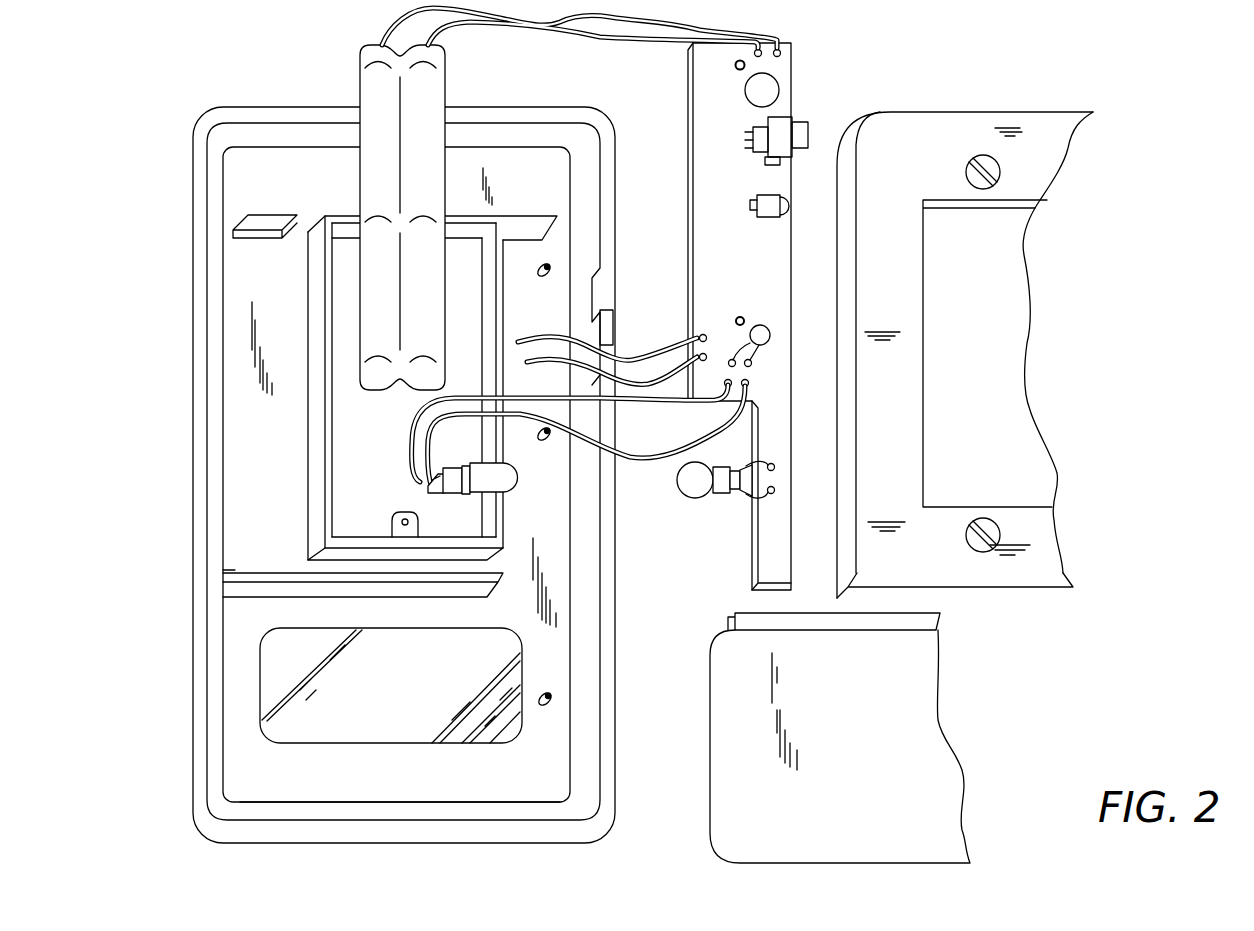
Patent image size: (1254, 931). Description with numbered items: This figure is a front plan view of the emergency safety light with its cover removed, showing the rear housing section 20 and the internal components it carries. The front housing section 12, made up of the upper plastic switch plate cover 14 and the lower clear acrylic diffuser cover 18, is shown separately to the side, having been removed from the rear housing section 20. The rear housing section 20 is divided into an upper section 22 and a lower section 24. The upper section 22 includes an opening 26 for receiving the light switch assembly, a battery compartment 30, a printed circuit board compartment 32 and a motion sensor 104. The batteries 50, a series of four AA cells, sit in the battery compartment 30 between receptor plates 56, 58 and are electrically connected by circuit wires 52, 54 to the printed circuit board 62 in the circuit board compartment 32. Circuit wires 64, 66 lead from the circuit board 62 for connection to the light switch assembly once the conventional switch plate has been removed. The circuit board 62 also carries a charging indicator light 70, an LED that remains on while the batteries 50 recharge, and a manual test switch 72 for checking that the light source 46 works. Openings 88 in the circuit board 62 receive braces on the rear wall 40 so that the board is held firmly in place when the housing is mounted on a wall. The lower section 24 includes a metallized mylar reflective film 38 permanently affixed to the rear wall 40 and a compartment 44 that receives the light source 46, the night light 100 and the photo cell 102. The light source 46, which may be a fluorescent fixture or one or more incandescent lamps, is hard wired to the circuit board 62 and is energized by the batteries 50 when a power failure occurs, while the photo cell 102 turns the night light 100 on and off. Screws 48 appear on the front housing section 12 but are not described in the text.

The front housing section 12 is at (907, 166).
The upper plastic switch plate cover 14 is at (904, 478).
The lower clear acrylic diffuser cover 18 is at (840, 771).
The rear housing section 20 is at (263, 88).
The upper section 22 is at (290, 197).
The lower section 24 is at (266, 620).
The opening 26 is at (383, 451).
The battery compartment 30 is at (278, 466).
The printed circuit board compartment 32 is at (553, 305).
The metallized mylar reflective film 38 is at (400, 705).
The rear wall 40 is at (463, 786).
The compartment 44 is at (541, 648).
The light source 46 is at (695, 492).
The screws 48 is at (995, 157).
The batteries 50 is at (396, 145).
The circuit wire 52 is at (681, 17).
The circuit wire 54 is at (741, 42).
The receptor plate 56 is at (242, 238).
The receptor plate 58 is at (234, 570).
The printed circuit board 62 is at (735, 209).
The circuit wire 64 is at (542, 336).
The circuit wire 66 is at (535, 360).
The charging indicator light 70 is at (767, 215).
The manual test switch 72 is at (752, 135).
The openings 88 is at (733, 63).
The night light 100 is at (493, 482).
The photo cell 102 is at (762, 325).
The motion sensor 104 is at (750, 79).